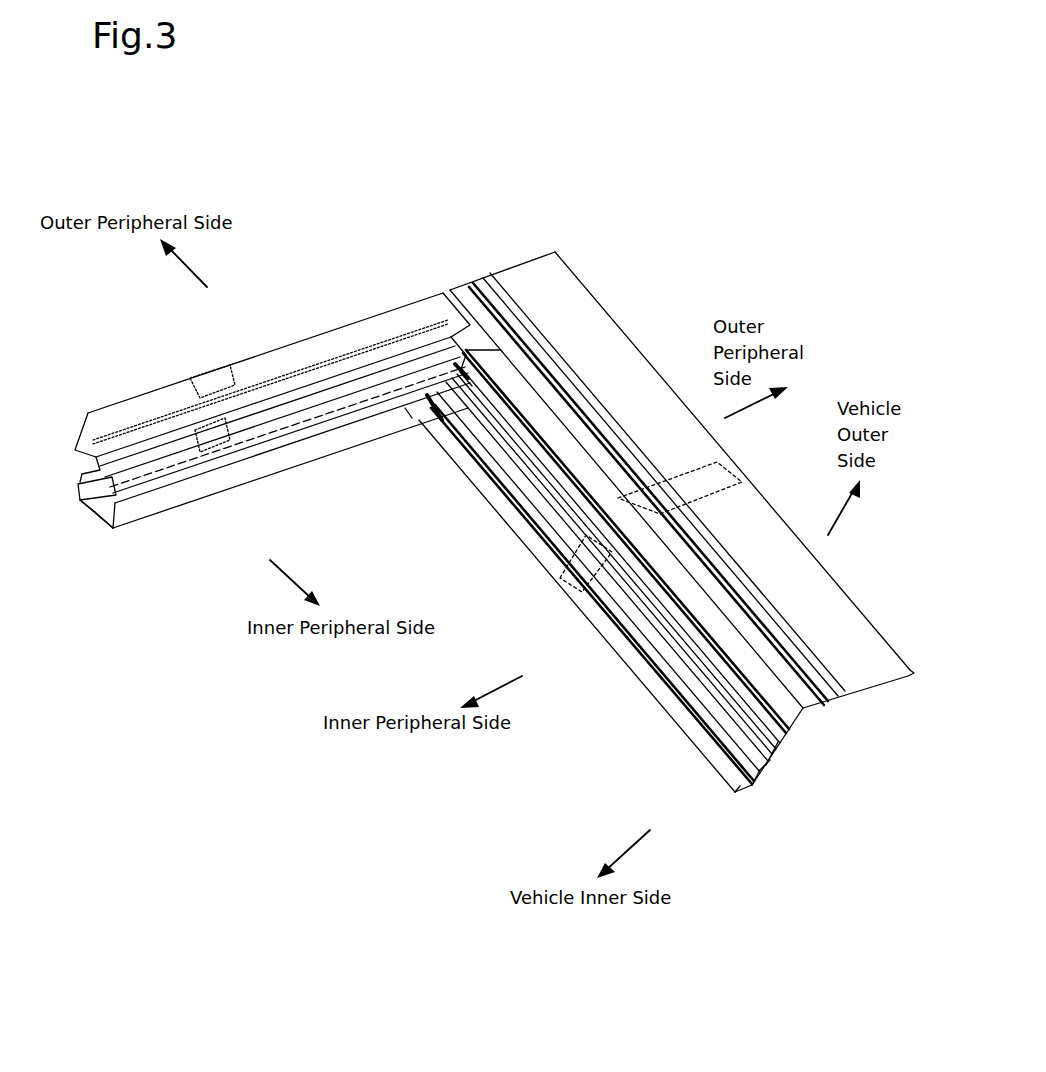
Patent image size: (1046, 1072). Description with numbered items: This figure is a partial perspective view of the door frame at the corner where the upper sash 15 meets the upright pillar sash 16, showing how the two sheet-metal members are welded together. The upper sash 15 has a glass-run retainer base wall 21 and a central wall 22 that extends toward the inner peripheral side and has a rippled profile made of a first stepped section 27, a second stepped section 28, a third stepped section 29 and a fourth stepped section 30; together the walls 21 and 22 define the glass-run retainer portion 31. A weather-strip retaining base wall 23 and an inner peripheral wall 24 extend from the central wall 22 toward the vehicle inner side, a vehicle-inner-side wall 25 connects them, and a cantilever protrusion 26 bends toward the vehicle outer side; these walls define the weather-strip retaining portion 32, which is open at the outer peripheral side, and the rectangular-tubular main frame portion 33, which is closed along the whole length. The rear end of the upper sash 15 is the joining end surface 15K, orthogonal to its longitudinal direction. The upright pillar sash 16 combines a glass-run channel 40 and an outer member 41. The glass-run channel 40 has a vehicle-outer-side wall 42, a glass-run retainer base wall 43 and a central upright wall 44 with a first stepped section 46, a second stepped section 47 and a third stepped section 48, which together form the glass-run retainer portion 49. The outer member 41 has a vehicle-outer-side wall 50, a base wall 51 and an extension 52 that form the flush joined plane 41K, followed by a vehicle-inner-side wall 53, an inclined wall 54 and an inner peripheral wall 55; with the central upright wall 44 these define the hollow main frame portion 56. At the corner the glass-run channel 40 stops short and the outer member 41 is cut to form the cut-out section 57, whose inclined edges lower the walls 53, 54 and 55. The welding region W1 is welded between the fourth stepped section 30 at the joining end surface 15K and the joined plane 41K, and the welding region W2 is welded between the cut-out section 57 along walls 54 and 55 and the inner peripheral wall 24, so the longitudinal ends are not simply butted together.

The upper sash 15 is at (252, 328).
The joining end surface 15K is at (453, 333).
The upright pillar sash 16 is at (892, 772).
The glass-run retainer base wall 21 is at (160, 400).
The central wall 22 is at (232, 573).
The weather-strip retaining base wall 23 is at (80, 503).
The inner peripheral wall 24 is at (305, 455).
The vehicle-inner-side wall 25 is at (92, 514).
The cantilever protrusion 26 is at (83, 497).
The first stepped section 27 is at (185, 435).
The second stepped section 28 is at (170, 455).
The third stepped section 29 is at (150, 470).
The fourth stepped section 30 is at (130, 480).
The glass-run retainer portion 31 is at (325, 430).
The weather-strip retaining portion 32 is at (72, 462).
The main frame portion 33 is at (105, 542).
The glass-run channel 40 is at (800, 730).
The outer member 41 is at (893, 690).
The joined plane 41K is at (465, 320).
The vehicle-outer-side wall 42 is at (768, 668).
The glass-run retainer base wall 43 is at (685, 620).
The central upright wall 44 is at (656, 808).
The first stepped section 46 is at (692, 716).
The second stepped section 47 is at (735, 742).
The third stepped section 48 is at (738, 760).
The glass-run retainer portion 49 is at (770, 778).
The vehicle-outer-side wall 50 is at (800, 566).
The base wall 51 is at (700, 505).
The extension 52 is at (762, 800).
The vehicle-inner-side wall 53 is at (747, 800).
The inclined wall 54 is at (660, 680).
The inner peripheral wall 55 is at (650, 660).
The main frame portion 56 is at (722, 797).
The cut-out section 57 is at (405, 412).
The welding region W1 is at (488, 318).
The welding region W2 is at (448, 432).